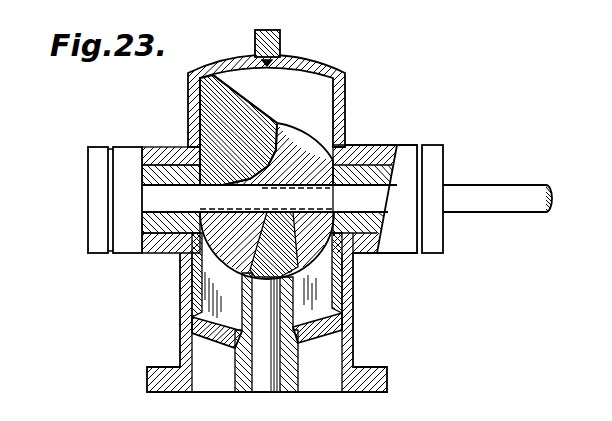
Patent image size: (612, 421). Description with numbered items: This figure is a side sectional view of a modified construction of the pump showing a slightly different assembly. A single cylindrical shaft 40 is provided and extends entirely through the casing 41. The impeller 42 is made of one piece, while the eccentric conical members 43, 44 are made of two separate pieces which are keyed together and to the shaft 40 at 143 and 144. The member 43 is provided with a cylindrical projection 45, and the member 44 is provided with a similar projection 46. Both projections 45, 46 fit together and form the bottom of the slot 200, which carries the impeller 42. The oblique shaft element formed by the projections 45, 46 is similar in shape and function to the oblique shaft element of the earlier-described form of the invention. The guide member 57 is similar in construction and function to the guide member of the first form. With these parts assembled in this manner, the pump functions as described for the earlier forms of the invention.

The cylindrical shaft 40 is at (508, 190).
The casing 41 is at (347, 110).
The impeller 42 is at (225, 92).
The eccentric conical member 43 is at (180, 272).
The eccentric conical member 44 is at (297, 143).
The cylindrical projection 45 is at (249, 275).
The projection 46 is at (314, 262).
The guide member 57 is at (188, 302).
The keying location 143 is at (158, 257).
The keying location 144 is at (360, 147).
The slot 200 is at (273, 117).